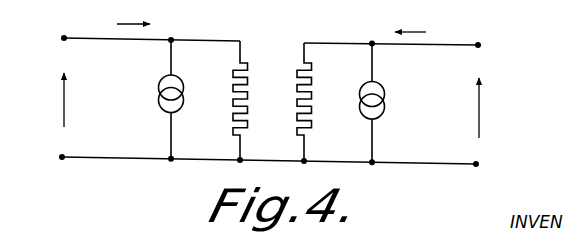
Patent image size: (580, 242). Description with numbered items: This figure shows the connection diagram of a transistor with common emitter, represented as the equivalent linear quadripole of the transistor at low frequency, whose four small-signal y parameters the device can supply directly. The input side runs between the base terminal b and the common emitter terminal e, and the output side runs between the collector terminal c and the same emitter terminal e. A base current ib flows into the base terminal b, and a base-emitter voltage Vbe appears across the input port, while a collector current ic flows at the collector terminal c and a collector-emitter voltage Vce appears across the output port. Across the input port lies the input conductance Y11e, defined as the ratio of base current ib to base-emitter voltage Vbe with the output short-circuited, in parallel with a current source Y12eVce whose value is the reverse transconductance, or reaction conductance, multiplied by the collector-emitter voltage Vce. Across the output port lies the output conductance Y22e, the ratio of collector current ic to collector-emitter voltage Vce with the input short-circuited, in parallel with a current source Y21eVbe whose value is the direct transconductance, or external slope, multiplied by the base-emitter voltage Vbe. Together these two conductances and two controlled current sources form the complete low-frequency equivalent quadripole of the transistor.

The base terminal b is at (64, 24).
The collector terminal c is at (477, 34).
The emitter terminal e is at (267, 172).
The base current ib is at (133, 15).
The collector current ic is at (410, 22).
The base-emitter voltage Vbe is at (42, 100).
The collector-emitter voltage Vce is at (497, 108).
The input conductance Y11e is at (219, 100).
The reverse transconductance current source Y12eVce is at (134, 99).
The direct transconductance current source Y21eVbe is at (407, 103).
The output conductance Y22e is at (326, 102).